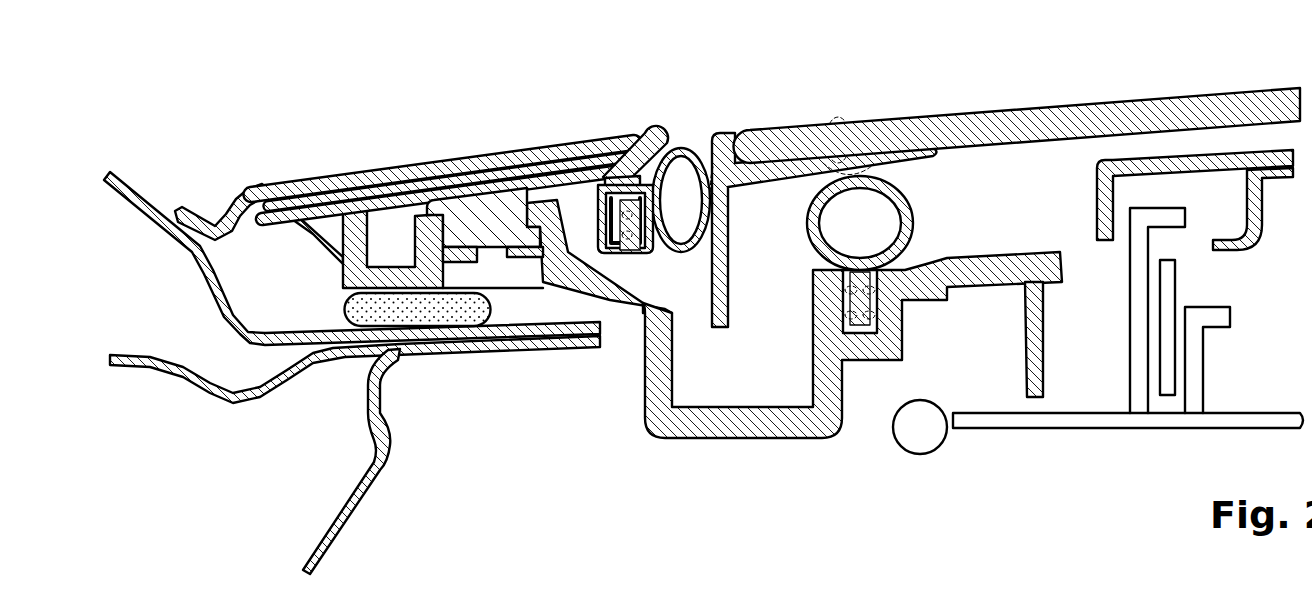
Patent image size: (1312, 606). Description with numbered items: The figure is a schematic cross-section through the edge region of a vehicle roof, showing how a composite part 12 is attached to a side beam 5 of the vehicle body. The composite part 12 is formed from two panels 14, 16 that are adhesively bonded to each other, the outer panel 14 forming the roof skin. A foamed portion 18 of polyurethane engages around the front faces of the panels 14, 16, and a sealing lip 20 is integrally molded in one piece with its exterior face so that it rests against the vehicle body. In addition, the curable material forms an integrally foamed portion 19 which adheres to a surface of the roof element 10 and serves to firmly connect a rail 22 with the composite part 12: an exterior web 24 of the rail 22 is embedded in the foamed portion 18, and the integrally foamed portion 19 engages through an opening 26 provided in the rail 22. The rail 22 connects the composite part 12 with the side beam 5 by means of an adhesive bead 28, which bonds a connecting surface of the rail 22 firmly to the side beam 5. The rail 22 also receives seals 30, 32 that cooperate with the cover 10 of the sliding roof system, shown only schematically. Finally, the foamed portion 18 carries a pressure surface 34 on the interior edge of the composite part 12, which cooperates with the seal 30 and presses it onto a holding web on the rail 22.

The side beam 5 is at (370, 388).
The roof element 10 is at (1000, 115).
The composite part 12 is at (406, 92).
The outer panel 14 is at (397, 172).
The panel 16 is at (440, 187).
The foamed portion 18 is at (293, 223).
The integrally foamed portion 19 is at (493, 217).
The sealing lip 20 is at (193, 210).
The rail 22 is at (743, 430).
The exterior web 24 is at (333, 233).
The opening 26 is at (543, 273).
The adhesive bead 28 is at (432, 315).
The seal 30 is at (683, 150).
The seal 32 is at (913, 227).
The pressure surface 34 is at (633, 217).